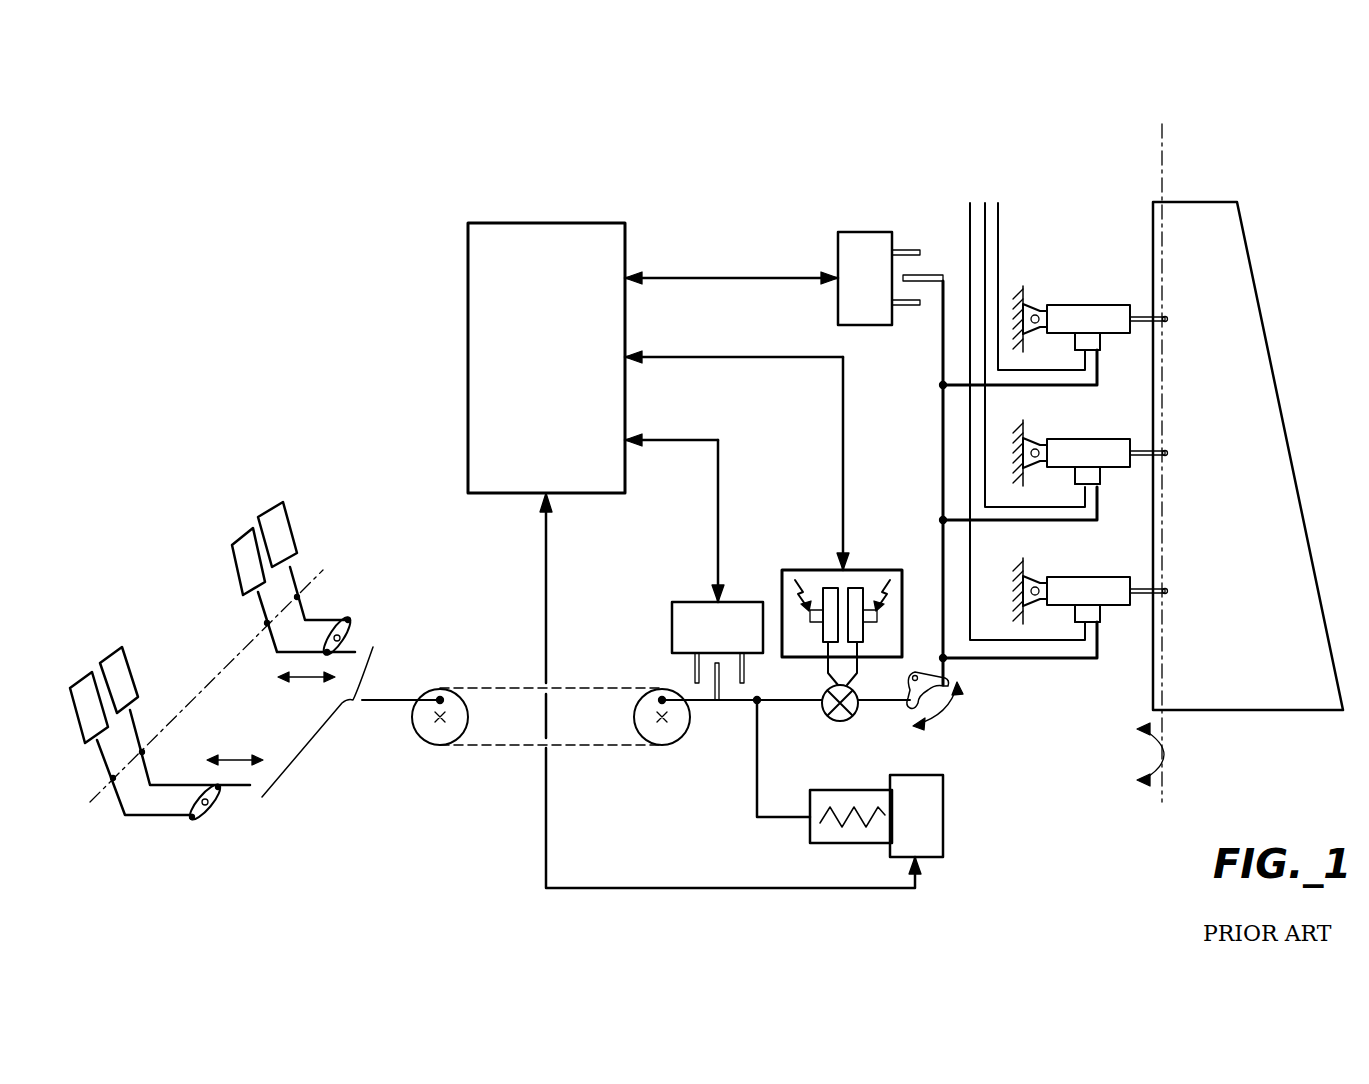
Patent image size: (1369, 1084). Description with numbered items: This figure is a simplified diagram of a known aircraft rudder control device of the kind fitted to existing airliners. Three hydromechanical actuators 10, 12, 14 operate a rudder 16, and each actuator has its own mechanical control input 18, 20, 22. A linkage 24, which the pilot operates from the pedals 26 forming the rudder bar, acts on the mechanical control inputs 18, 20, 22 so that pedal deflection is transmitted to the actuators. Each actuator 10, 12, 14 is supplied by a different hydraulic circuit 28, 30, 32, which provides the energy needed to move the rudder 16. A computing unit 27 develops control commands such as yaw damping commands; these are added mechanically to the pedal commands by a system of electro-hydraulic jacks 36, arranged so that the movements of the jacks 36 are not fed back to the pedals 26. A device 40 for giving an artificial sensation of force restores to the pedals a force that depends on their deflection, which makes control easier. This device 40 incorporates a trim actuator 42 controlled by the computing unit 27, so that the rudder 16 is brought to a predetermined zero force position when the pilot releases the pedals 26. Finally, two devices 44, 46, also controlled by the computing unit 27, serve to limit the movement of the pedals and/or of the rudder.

The actuator 10 is at (1085, 313).
The actuator 12 is at (1085, 450).
The actuator 14 is at (1085, 588).
The rudder 16 is at (1229, 224).
The mechanical control input 18 is at (1090, 343).
The mechanical control input 20 is at (1090, 478).
The mechanical control input 22 is at (1090, 615).
The linkage 24 is at (500, 748).
The pedals 26 is at (230, 587).
The computing unit 27 is at (480, 390).
The hydraulic circuit 28 is at (1000, 230).
The hydraulic circuit 30 is at (978, 215).
The hydraulic circuit 32 is at (970, 230).
The electro-hydraulic jacks 36 is at (818, 580).
The artificial force sensation device 40 is at (820, 835).
The trim actuator 42 is at (937, 813).
The limiting device 44 is at (675, 610).
The limiting device 46 is at (838, 238).